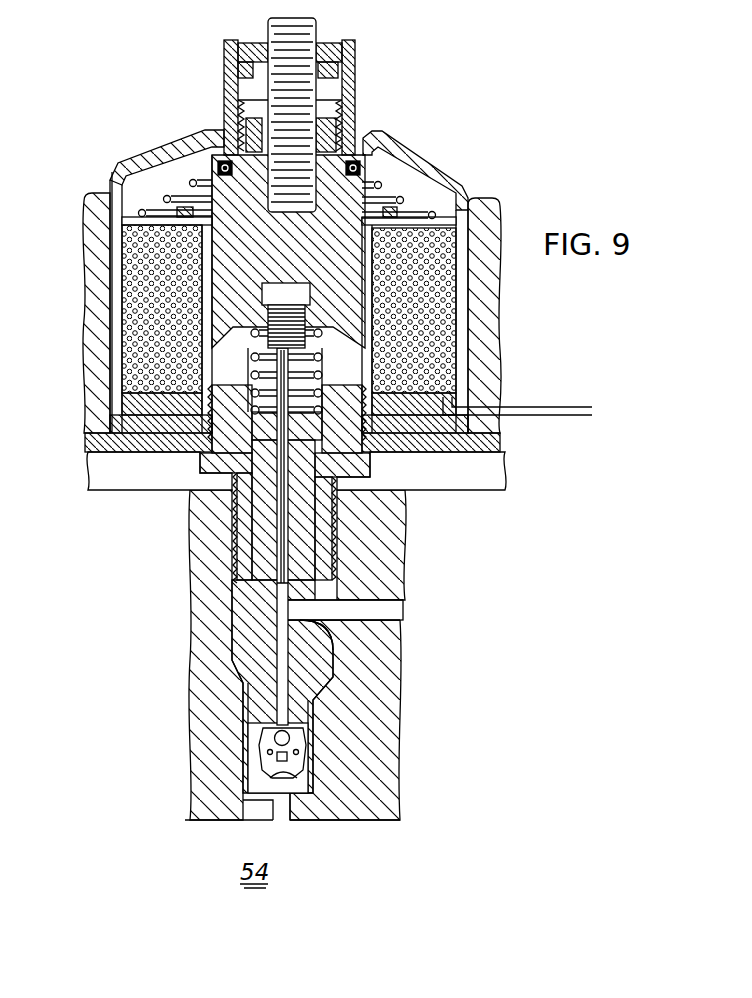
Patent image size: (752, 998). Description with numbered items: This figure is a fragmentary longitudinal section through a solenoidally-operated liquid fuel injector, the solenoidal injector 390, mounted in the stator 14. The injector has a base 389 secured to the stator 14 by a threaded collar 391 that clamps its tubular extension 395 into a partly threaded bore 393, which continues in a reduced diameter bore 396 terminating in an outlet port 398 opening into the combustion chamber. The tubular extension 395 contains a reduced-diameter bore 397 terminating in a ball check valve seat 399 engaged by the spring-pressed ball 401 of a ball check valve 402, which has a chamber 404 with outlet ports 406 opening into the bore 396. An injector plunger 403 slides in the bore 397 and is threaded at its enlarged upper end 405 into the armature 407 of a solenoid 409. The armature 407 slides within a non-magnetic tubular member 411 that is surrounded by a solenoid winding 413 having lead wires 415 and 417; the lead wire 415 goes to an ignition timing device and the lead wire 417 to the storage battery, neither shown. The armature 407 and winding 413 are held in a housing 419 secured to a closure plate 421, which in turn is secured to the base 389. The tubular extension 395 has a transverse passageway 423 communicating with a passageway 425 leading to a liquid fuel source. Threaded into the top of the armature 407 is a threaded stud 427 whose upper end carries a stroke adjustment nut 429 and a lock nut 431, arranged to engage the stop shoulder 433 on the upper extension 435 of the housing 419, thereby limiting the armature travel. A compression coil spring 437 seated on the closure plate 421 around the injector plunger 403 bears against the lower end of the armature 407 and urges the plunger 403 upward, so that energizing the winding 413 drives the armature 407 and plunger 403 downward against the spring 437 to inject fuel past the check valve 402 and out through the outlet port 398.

The stator 14 is at (186, 563).
The base 389 is at (108, 470).
The solenoidal injector 390 is at (170, 146).
The threaded collar 391 is at (237, 507).
The partly threaded bore 393 is at (232, 640).
The tubular extension 395 is at (245, 598).
The reduced diameter bore 396 is at (242, 800).
The reduced-diameter bore 397 is at (278, 705).
The outlet port 398 is at (288, 826).
The ball check valve seat 399 is at (266, 740).
The spring-pressed ball 401 is at (292, 740).
The ball check valve 402 is at (302, 752).
The injector plunger 403 is at (313, 381).
The chamber 404 is at (308, 770).
The enlarged upper end 405 is at (268, 343).
The outlet ports 406 is at (258, 766).
The armature 407 is at (318, 284).
The solenoid 409 is at (128, 218).
The non-magnetic tubular member 411 is at (205, 258).
The solenoid winding 413 is at (112, 338).
The lead wire 415 is at (581, 407).
The lead wire 417 is at (571, 417).
The housing 419 is at (122, 170).
The closure plate 421 is at (107, 422).
The transverse passageway 423 is at (320, 632).
The passageway 425 is at (382, 599).
The threaded stud 427 is at (303, 42).
The stroke adjustment nut 429 is at (236, 70).
The lock nut 431 is at (248, 50).
The stop shoulder 433 is at (341, 98).
The upper extension 435 is at (350, 52).
The compression coil spring 437 is at (263, 392).